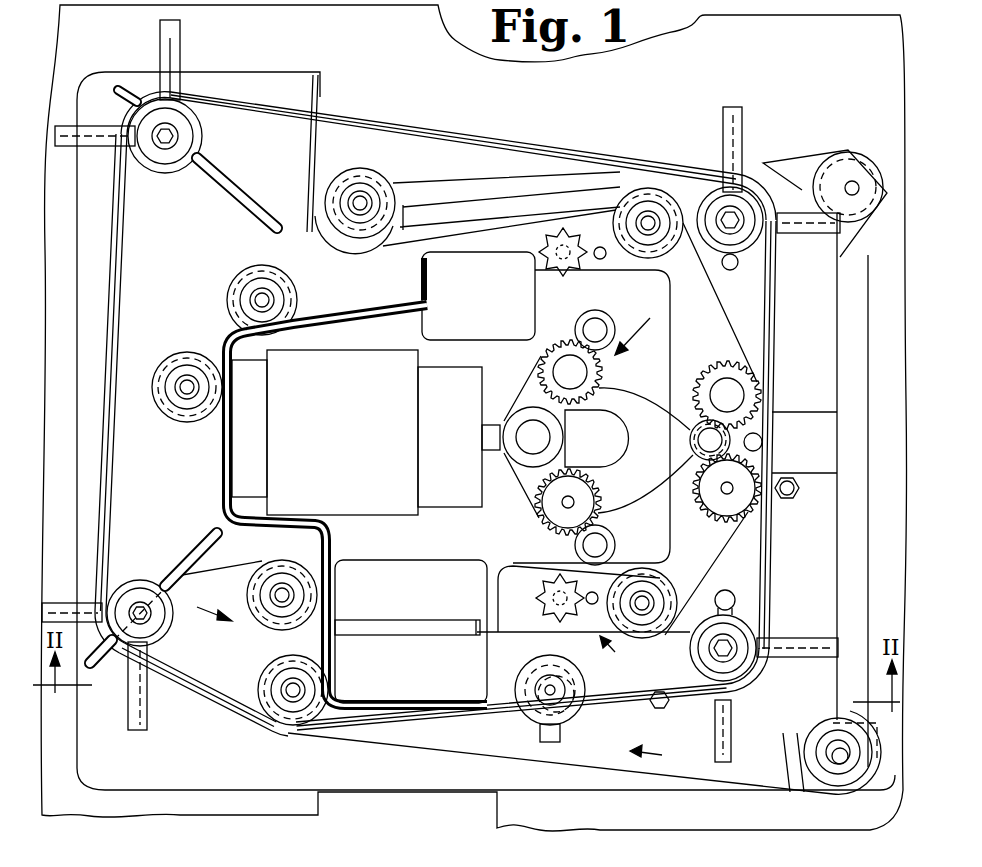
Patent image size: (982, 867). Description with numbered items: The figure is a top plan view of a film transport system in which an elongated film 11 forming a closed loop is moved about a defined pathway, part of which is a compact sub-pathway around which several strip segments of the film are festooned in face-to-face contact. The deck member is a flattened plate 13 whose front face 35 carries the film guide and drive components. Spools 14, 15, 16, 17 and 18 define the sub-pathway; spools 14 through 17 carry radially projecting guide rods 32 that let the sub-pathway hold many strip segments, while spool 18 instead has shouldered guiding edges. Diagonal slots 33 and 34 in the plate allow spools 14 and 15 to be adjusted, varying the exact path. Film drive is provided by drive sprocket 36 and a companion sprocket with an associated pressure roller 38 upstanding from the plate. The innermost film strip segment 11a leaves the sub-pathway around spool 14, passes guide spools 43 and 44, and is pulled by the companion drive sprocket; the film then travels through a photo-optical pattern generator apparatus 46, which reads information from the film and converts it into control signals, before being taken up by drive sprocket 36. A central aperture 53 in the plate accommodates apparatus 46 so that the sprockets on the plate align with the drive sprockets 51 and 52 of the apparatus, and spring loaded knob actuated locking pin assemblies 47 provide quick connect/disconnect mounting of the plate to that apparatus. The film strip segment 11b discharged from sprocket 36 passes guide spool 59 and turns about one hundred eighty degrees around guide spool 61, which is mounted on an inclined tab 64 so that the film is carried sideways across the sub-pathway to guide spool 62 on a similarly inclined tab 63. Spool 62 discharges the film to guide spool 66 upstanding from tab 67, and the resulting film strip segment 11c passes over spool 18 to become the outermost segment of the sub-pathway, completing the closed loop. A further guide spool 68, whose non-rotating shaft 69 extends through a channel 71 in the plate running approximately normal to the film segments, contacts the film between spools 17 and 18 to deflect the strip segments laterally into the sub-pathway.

The film 11 is at (583, 619).
The innermost film strip segment 11a is at (222, 597).
The film strip segment 11b is at (442, 190).
The film strip segment 11c is at (488, 768).
The plate 13 is at (323, 92).
The spool 14 is at (132, 580).
The spool 15 is at (172, 175).
The spool 16 is at (755, 255).
The spool 17 is at (740, 604).
The spool 18 is at (262, 672).
The guide rods 32 is at (744, 134).
The slot 33 is at (196, 545).
The slot 34 is at (248, 190).
The front face 35 is at (175, 281).
The drive sprocket 36 is at (757, 390).
The pressure roller 38 is at (695, 460).
The guide spool 43 is at (318, 562).
The guide spool 44 is at (640, 568).
The photo-optical pattern generator apparatus 46 is at (598, 429).
The locking pin assemblies 47 is at (538, 244).
The drive sprocket 51 is at (600, 378).
The drive sprocket 52 is at (548, 506).
The aperture 53 is at (356, 312).
The guide spool 59 is at (648, 188).
The guide spool 61 is at (350, 178).
The guide spool 62 is at (868, 170).
The tab 63 is at (835, 153).
The tab 64 is at (385, 248).
The guide spool 66 is at (878, 780).
The tab 67 is at (800, 790).
The guide spool 68 is at (520, 681).
The shaft 69 is at (565, 690).
The channel 71 is at (560, 738).